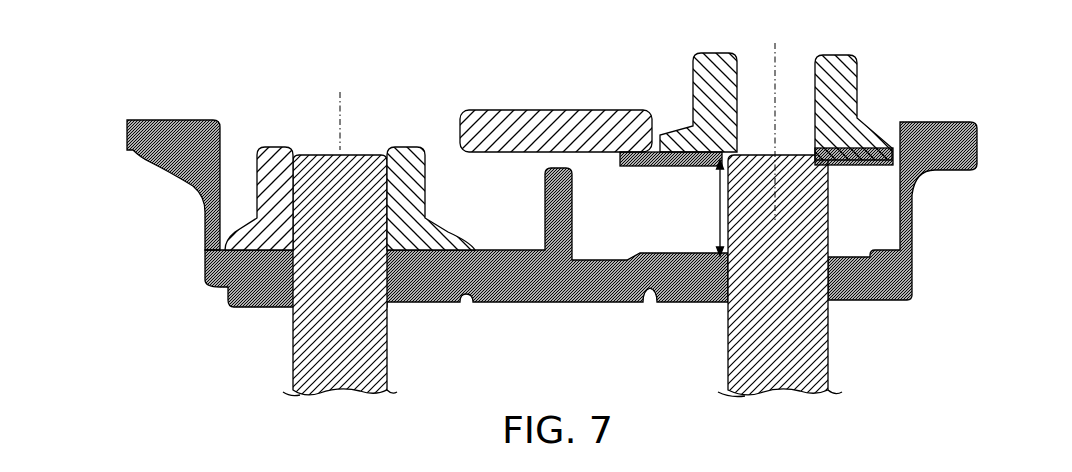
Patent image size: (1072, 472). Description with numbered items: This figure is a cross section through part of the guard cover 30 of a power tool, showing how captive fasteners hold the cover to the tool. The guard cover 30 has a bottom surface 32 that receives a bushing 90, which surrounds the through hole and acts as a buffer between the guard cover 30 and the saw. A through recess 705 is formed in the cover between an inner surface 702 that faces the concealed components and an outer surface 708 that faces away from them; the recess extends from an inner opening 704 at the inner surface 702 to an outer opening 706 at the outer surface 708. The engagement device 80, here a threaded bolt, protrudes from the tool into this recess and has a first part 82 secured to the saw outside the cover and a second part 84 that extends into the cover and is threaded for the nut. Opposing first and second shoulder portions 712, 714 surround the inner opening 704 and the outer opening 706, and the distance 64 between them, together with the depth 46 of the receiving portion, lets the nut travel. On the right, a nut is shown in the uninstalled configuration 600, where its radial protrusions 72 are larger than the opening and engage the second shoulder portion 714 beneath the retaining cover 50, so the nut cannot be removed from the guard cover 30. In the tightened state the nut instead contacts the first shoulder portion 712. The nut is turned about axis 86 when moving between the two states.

The guard cover 30 is at (187, 172).
The bottom surface 32 is at (562, 311).
The depth 46 is at (830, 182).
The retaining cover 50 is at (198, 120).
The distance 64 is at (717, 212).
The radial protrusions 72 is at (568, 108).
The engagement device 80 is at (860, 82).
The first part 82 is at (730, 352).
The second part 84 is at (790, 215).
The axis 86 is at (778, 63).
The bushing 90 is at (857, 302).
The uninstalled configuration 600 is at (917, 52).
The inner surface 702 is at (895, 302).
The inner opening 704 is at (828, 322).
The through recess 705 is at (443, 205).
The outer opening 706 is at (661, 124).
The outer surface 708 is at (613, 188).
The first shoulder portion 712 is at (712, 258).
The second shoulder portion 714 is at (657, 152).